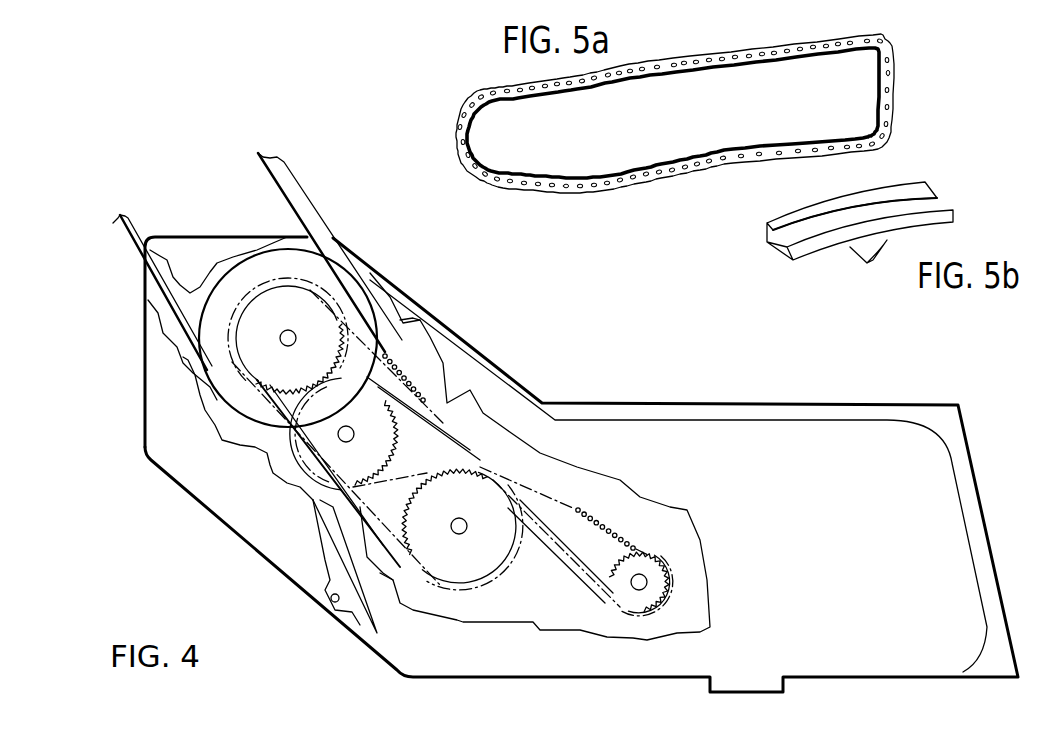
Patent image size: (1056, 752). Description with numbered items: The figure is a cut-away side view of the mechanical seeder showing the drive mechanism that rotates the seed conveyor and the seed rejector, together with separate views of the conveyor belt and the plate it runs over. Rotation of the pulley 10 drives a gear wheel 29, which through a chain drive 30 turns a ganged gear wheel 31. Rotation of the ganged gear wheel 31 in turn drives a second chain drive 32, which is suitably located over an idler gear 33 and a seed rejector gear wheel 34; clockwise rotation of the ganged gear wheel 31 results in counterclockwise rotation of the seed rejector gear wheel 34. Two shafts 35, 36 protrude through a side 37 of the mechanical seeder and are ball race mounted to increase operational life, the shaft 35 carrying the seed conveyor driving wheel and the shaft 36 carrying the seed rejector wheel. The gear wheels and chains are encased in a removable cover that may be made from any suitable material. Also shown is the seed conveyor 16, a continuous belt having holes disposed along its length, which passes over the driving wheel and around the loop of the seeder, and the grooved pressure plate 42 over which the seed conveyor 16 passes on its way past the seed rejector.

In FIG. 4, the pulley 10 is at (340, 280).
In FIG. 4, the gear wheel 29 is at (331, 337).
In FIG. 4, the chain drive 30 is at (400, 348).
In FIG. 4, the ganged gear wheel 31 is at (430, 557).
In FIG. 4, the chain drive 32 is at (578, 508).
In FIG. 4, the idler gear 33 is at (317, 467).
In FIG. 4, the seed rejector gear wheel 34 is at (657, 577).
In FIG. 4, the shaft 35 is at (459, 530).
In FIG. 4, the shaft 36 is at (639, 586).
In FIG. 4, the side of the mechanical seeder 37 is at (525, 648).
In FIG. 5A, the seed conveyor 16 is at (503, 192).
In FIG. 5B, the pressure plate 42 is at (805, 258).